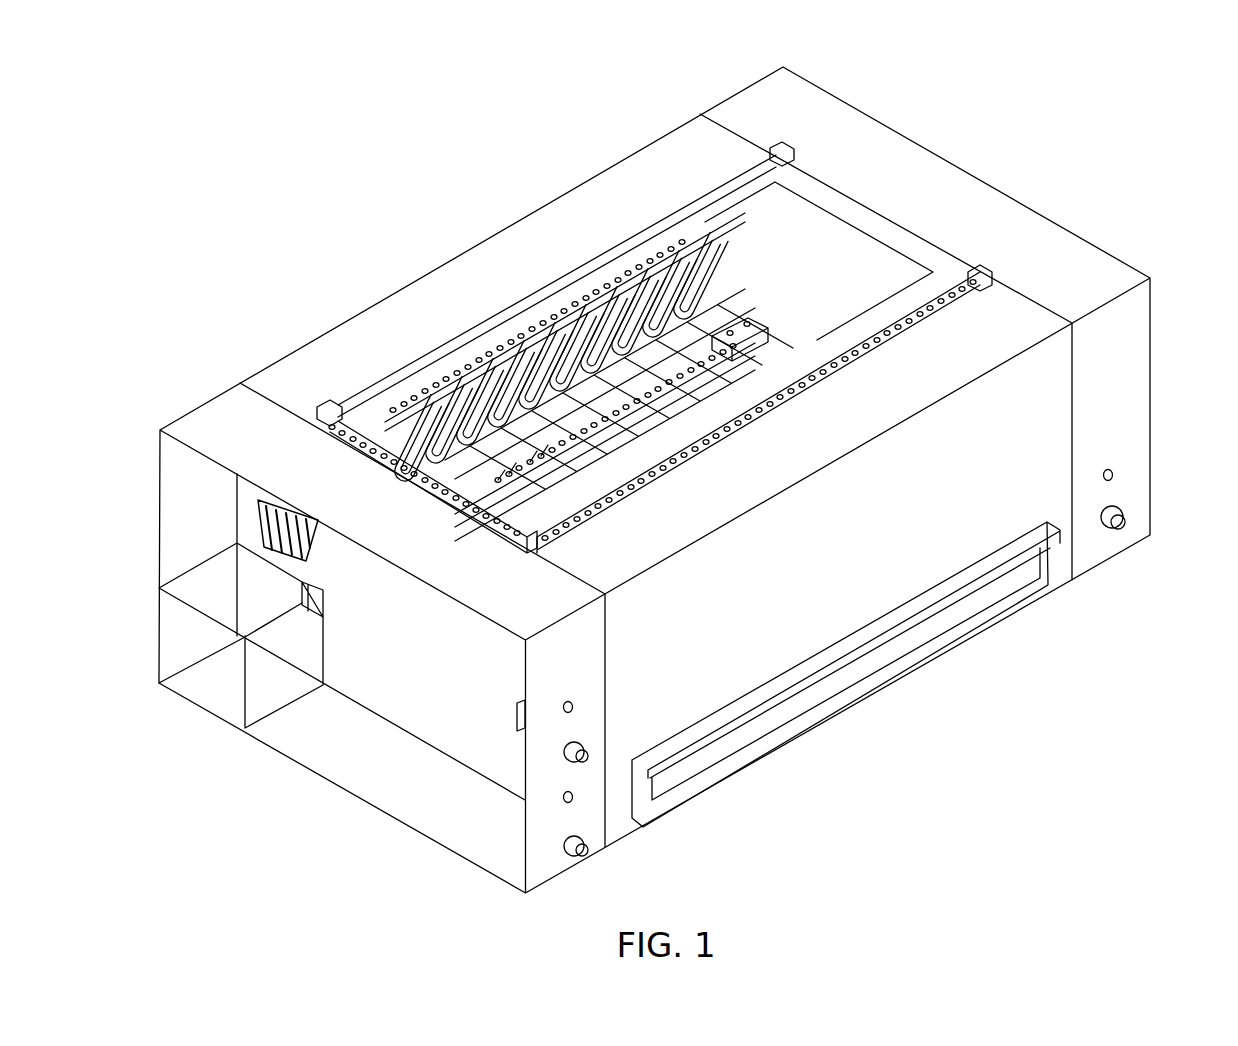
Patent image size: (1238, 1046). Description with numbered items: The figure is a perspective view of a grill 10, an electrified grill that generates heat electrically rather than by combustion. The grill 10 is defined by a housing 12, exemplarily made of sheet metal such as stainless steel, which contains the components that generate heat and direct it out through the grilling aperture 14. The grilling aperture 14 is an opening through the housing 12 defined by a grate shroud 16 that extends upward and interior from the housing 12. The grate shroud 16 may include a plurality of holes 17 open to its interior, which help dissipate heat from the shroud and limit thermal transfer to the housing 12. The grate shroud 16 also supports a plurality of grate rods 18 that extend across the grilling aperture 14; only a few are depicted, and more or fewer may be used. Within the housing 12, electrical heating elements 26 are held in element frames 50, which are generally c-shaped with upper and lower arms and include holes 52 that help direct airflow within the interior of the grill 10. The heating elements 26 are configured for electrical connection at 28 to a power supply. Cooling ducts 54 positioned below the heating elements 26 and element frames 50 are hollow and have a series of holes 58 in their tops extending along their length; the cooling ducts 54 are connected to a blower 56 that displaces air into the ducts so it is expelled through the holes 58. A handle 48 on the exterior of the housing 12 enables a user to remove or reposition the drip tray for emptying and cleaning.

The grill 10 is at (1078, 128).
The housing 12 is at (1140, 388).
The grilling aperture 14 is at (797, 200).
The grate shroud 16 is at (945, 259).
The holes 17 is at (924, 323).
The grate rods 18 is at (808, 292).
The electrical heating elements 26 is at (555, 305).
The electrical connection 28 is at (272, 521).
The handle 48 is at (872, 632).
The element frames 50 is at (612, 272).
The holes 52 is at (693, 237).
The cooling ducts 54 is at (325, 600).
The blower 56 is at (172, 656).
The holes 58 is at (662, 388).